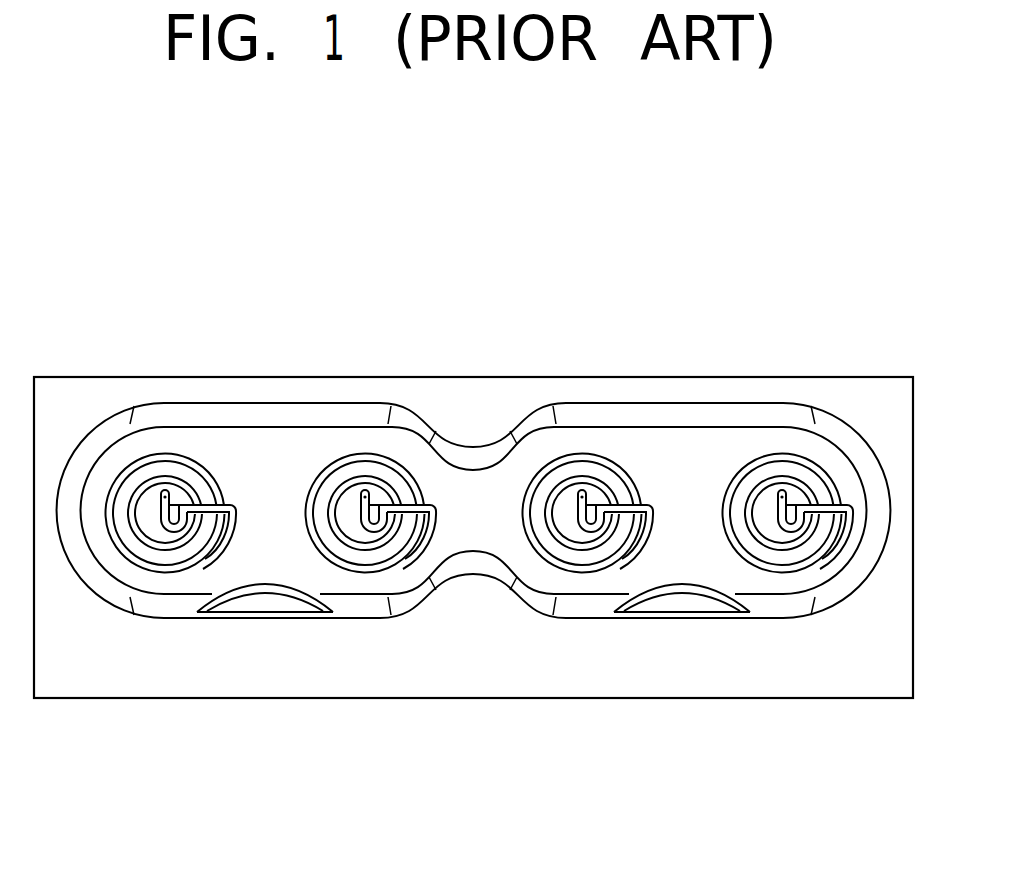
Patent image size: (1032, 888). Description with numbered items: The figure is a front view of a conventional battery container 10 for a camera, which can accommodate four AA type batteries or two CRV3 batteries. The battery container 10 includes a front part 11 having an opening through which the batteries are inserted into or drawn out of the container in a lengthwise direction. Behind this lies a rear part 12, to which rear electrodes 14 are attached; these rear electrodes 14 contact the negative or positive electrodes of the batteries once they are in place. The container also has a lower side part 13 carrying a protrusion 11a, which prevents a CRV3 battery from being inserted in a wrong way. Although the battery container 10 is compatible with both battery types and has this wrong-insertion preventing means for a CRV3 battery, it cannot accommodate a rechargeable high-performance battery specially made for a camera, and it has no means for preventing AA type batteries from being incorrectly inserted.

The battery container 10 is at (600, 256).
The front part 11 is at (485, 673).
The protrusion 11a is at (265, 593).
The rear part 12 is at (265, 440).
The lower side part 13 is at (178, 603).
The rear electrodes 14 is at (164, 455).